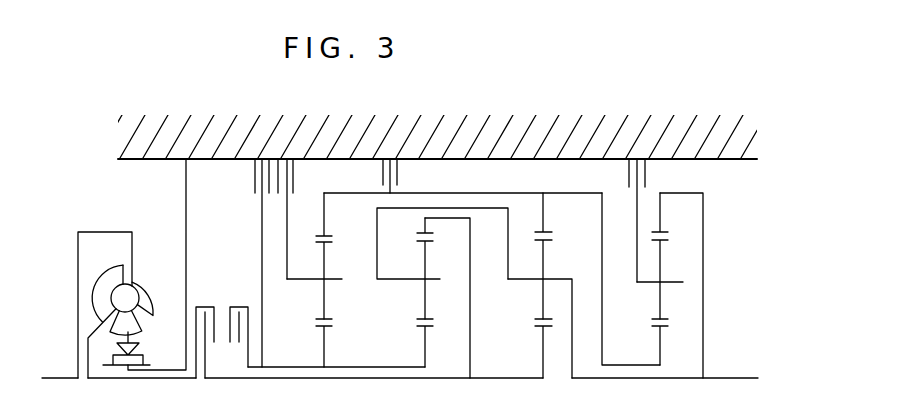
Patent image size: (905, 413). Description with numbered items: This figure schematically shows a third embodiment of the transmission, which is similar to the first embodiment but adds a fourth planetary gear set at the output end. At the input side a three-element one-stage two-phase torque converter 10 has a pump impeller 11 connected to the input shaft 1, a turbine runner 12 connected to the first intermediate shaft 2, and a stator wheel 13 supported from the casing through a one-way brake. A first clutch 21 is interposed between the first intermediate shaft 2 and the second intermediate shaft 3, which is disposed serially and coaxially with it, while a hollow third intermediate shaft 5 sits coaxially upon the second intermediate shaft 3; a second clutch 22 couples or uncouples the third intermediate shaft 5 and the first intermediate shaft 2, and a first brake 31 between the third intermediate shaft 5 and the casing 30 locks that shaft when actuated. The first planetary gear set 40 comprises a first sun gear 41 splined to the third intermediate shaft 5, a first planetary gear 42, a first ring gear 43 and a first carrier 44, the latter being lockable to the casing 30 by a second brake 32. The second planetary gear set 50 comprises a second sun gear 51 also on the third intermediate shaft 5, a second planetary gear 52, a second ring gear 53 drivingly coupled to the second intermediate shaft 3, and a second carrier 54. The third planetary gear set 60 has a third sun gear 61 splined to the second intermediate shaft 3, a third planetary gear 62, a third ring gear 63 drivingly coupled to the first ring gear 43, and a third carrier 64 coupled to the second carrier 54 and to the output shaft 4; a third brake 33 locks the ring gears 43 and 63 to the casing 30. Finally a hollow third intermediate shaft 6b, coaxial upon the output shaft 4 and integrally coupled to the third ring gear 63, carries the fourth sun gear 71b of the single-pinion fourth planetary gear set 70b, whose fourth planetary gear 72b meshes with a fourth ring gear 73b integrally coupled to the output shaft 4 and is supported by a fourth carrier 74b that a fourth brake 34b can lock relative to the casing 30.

The input shaft 1 is at (57, 380).
The first intermediate shaft 2 is at (138, 380).
The second intermediate shaft 3 is at (230, 385).
The output shaft 4 is at (745, 380).
The third intermediate shaft 5 is at (288, 368).
The third intermediate shaft 6b is at (624, 368).
The torque converter 10 is at (108, 268).
The pump impeller 11 is at (147, 300).
The turbine runner 12 is at (100, 287).
The stator wheel 13 is at (122, 320).
The first clutch 21 is at (205, 299).
The second clutch 22 is at (240, 299).
The casing 30 is at (468, 107).
The first brake 31 is at (261, 150).
The second brake 32 is at (291, 150).
The third brake 33 is at (398, 150).
The fourth brake 34b is at (640, 150).
The first planetary gear set 40 is at (442, 303).
The first sun gear 41 is at (327, 342).
The first planetary gear 42 is at (326, 302).
The first ring gear 43 is at (326, 213).
The first carrier 44 is at (302, 280).
The second planetary gear set 50 is at (439, 289).
The second sun gear 51 is at (425, 342).
The second planetary gear 52 is at (425, 287).
The second ring gear 53 is at (427, 222).
The second carrier 54 is at (394, 279).
The third planetary gear set 60 is at (540, 303).
The third sun gear 61 is at (514, 395).
The third planetary gear 62 is at (543, 305).
The third ring gear 63 is at (545, 212).
The third carrier 64 is at (563, 279).
The fourth planetary gear set 70b is at (684, 303).
The fourth sun gear 71b is at (661, 344).
The fourth planetary gear 72b is at (664, 302).
The fourth ring gear 73b is at (664, 217).
The fourth carrier 74b is at (644, 283).